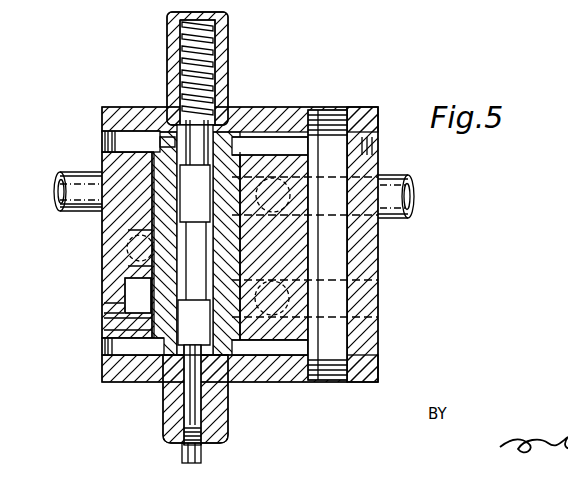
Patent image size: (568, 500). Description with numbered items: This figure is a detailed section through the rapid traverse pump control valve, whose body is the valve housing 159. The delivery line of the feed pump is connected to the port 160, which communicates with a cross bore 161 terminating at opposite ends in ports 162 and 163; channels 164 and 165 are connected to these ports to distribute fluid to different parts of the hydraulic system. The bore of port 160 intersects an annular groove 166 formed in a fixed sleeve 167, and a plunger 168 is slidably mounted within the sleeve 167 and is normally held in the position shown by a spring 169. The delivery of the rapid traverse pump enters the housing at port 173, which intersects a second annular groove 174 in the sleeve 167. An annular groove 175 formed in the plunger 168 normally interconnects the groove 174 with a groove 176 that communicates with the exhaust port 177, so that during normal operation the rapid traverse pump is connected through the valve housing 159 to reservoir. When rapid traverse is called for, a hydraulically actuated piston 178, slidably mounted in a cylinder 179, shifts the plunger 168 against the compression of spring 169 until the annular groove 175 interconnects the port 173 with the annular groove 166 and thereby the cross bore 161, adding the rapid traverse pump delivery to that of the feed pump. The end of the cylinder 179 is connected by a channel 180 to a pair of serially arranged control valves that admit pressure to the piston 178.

The valve housing 159 is at (106, 108).
The port 160 is at (283, 190).
The cross bore 161 is at (360, 241).
The port 162 is at (102, 177).
The port 163 is at (384, 177).
The channel 164 is at (56, 178).
The channel 165 is at (413, 213).
The annular groove 166 is at (84, 210).
The fixed sleeve 167 is at (169, 118).
The plunger 168 is at (208, 143).
The spring 169 is at (205, 52).
The port 173 is at (128, 258).
The second annular groove 174 is at (150, 237).
The annular groove 175 is at (140, 273).
The groove 176 is at (118, 318).
The exhaust port 177 is at (110, 307).
The hydraulically actuated piston 178 is at (190, 402).
The cylinder 179 is at (190, 427).
The channel 180 is at (183, 455).